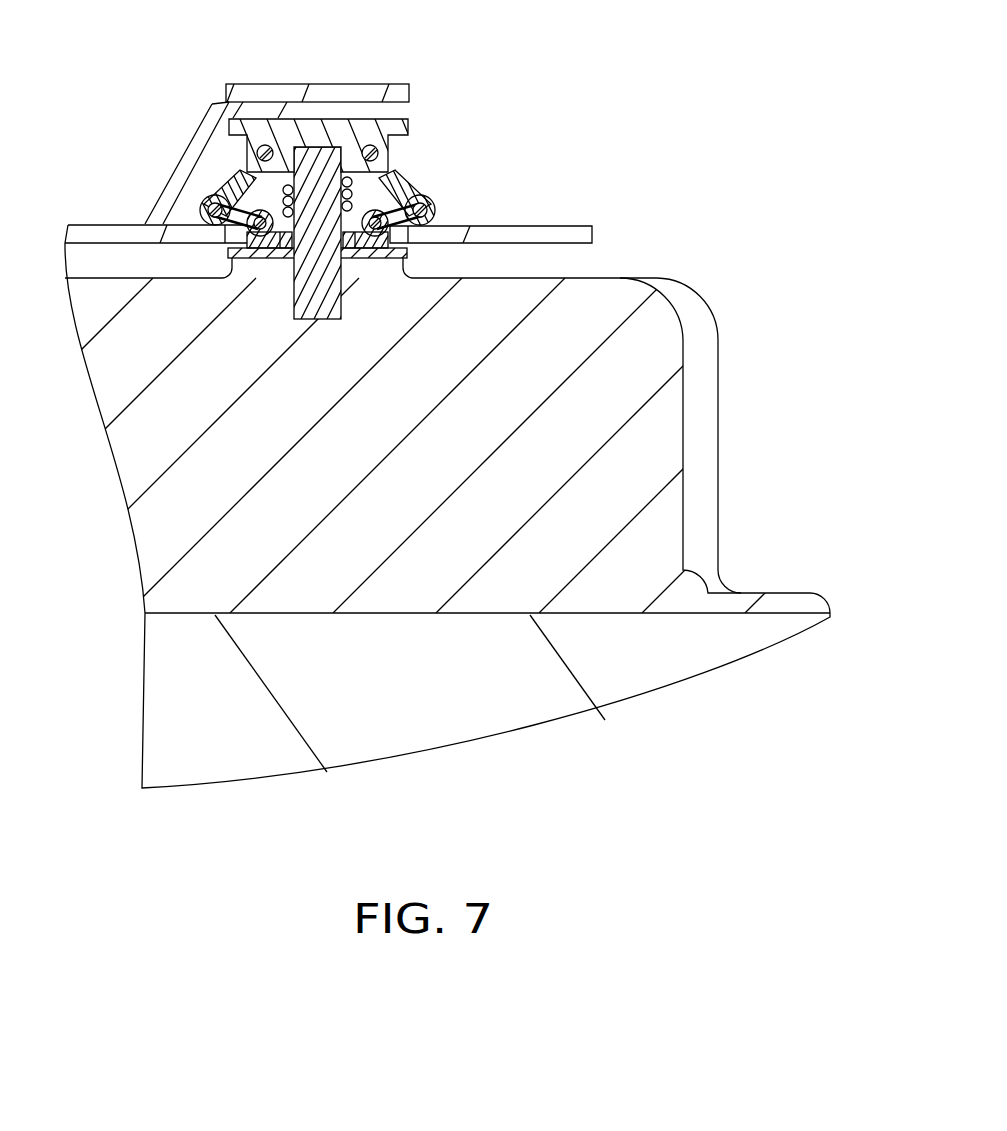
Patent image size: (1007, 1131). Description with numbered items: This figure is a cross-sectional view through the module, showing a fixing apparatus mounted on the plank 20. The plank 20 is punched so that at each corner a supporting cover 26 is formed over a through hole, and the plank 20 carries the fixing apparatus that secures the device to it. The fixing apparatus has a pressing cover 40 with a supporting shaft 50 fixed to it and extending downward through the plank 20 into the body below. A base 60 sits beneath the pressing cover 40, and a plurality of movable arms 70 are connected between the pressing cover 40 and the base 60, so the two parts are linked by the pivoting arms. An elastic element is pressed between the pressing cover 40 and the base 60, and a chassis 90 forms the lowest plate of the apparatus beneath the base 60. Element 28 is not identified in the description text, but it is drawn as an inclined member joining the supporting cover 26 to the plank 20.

The plank 20 is at (550, 233).
The supporting cover 26 is at (365, 89).
The support bracket 28 is at (207, 148).
The pressing cover 40 is at (397, 127).
The supporting shaft 50 is at (318, 165).
The base 60 is at (212, 232).
The movable arm 70 is at (428, 195).
The chassis 90 is at (408, 252).